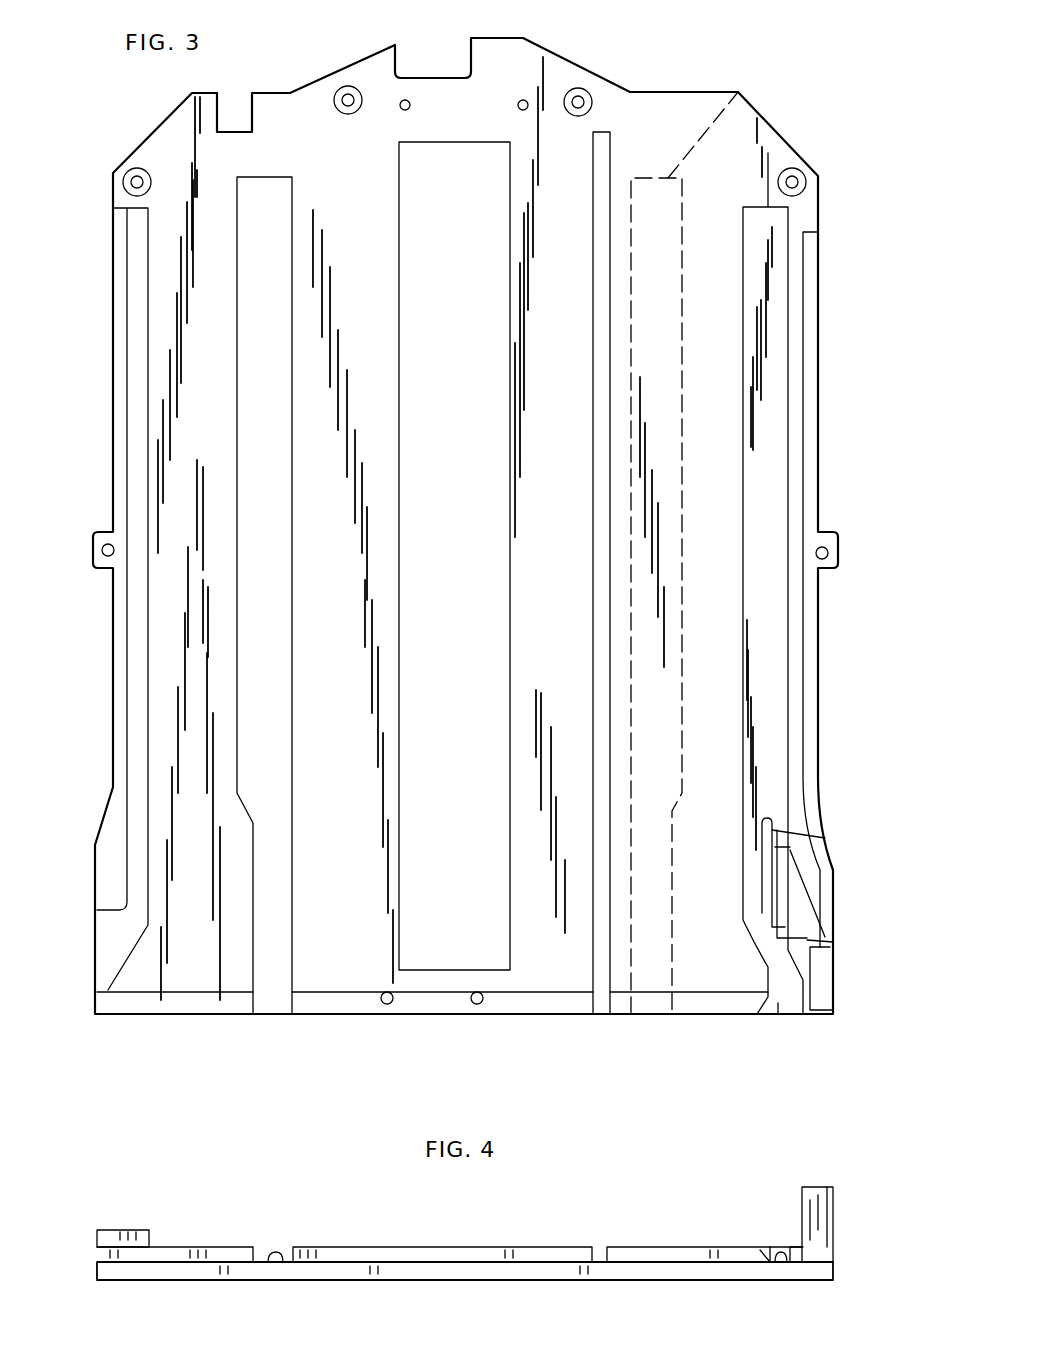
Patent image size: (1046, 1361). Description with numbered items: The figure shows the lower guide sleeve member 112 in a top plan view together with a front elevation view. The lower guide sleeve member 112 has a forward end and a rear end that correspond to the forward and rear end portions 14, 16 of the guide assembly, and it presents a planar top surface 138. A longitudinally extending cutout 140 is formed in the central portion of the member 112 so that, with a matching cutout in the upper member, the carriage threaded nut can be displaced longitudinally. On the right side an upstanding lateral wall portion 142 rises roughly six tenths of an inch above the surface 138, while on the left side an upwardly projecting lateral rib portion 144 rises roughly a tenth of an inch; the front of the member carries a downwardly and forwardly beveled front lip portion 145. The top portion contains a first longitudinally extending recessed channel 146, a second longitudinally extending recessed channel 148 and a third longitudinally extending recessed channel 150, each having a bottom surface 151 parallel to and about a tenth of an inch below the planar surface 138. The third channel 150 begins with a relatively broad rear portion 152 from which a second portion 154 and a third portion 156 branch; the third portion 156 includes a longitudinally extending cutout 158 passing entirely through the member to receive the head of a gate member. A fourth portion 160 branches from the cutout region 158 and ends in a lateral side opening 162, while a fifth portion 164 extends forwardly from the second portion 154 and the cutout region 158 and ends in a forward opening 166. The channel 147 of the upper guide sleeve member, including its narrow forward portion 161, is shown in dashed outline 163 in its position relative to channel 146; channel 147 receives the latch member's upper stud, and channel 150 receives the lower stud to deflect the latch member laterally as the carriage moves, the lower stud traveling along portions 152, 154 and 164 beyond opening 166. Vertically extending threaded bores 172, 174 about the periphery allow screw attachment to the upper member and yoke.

In FIG. 3, the forward end portion 14 is at (828, 1013).
In FIG. 4, the forward end portion 14 is at (820, 1282).
In FIG. 3, the rear end portion 16 is at (770, 127).
In FIG. 3, the lower guide sleeve member 112 is at (525, 55).
In FIG. 4, the lower guide sleeve member 112 is at (480, 1246).
In FIG. 3, the planar top surface 138 is at (343, 220).
In FIG. 4, the planar top surface 138 is at (208, 1246).
In FIG. 3, the longitudinally extending cutout 140 is at (430, 153).
In FIG. 3, the upstanding lateral wall portion 142 is at (810, 445).
In FIG. 4, the upstanding lateral wall portion 142 is at (812, 1185).
In FIG. 3, the upwardly projecting lateral rib portion 144 is at (127, 472).
In FIG. 4, the upwardly projecting lateral rib portion 144 is at (112, 1243).
In FIG. 3, the beveled front lip portion 145 is at (525, 1003).
In FIG. 4, the beveled front lip portion 145 is at (430, 1258).
In FIG. 3, the first longitudinally extending recessed channel 146 is at (270, 545).
In FIG. 4, the first longitudinally extending recessed channel 146 is at (268, 1248).
In FIG. 3, the channel in upper guide sleeve member 147 is at (742, 92).
In FIG. 3, the second longitudinally extending recessed channel 148 is at (591, 353).
In FIG. 4, the second longitudinally extending recessed channel 148 is at (598, 1245).
In FIG. 3, the third longitudinally extending recessed channel 150 is at (767, 650).
In FIG. 4, the third longitudinally extending recessed channel 150 is at (780, 1247).
In FIG. 4, the bottom surface 151 is at (280, 1255).
In FIG. 3, the first relatively broad rear portion 152 is at (770, 780).
In FIG. 3, the second portion 154 is at (762, 826).
In FIG. 3, the third portion 156 is at (775, 835).
In FIG. 3, the longitudinally extending cutout 158 is at (780, 877).
In FIG. 3, the fourth portion 160 is at (810, 943).
In FIG. 3, the narrow forward portion 161 is at (645, 955).
In FIG. 3, the lateral side opening 162 is at (823, 977).
In FIG. 3, the hidden outline 163 is at (650, 668).
In FIG. 3, the fifth portion 164 is at (763, 960).
In FIG. 3, the forward opening 166 is at (778, 1007).
In FIG. 3, the threaded bore 172 is at (792, 182).
In FIG. 3, the threaded bore 174 is at (822, 553).